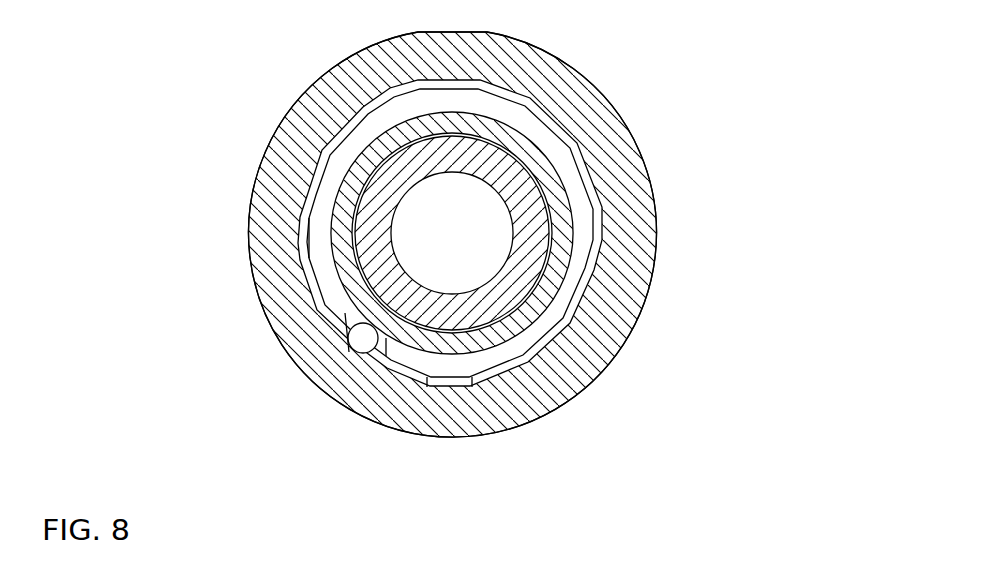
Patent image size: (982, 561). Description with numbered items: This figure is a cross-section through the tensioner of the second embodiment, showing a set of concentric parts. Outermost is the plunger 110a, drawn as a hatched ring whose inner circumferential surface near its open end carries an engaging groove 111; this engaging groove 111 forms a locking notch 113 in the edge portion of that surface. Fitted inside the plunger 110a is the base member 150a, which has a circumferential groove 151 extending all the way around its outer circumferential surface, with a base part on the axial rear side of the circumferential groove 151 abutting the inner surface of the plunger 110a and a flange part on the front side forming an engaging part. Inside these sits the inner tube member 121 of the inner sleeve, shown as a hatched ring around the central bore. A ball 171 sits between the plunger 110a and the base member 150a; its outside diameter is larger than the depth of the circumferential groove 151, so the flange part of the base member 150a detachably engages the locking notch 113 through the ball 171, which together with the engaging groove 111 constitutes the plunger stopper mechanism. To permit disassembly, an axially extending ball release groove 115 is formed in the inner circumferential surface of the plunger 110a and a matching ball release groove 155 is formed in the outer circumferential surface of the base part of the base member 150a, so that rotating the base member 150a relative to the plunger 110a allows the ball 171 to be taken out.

The plunger 110a is at (650, 155).
The engaging groove 111 is at (305, 202).
The locking notch 113 is at (313, 302).
The ball release groove 115 is at (460, 387).
The inner tube member 121 is at (535, 219).
The base member 150a is at (572, 142).
The circumferential groove 151 is at (318, 258).
The ball release groove 155 is at (386, 356).
The ball 171 is at (348, 350).